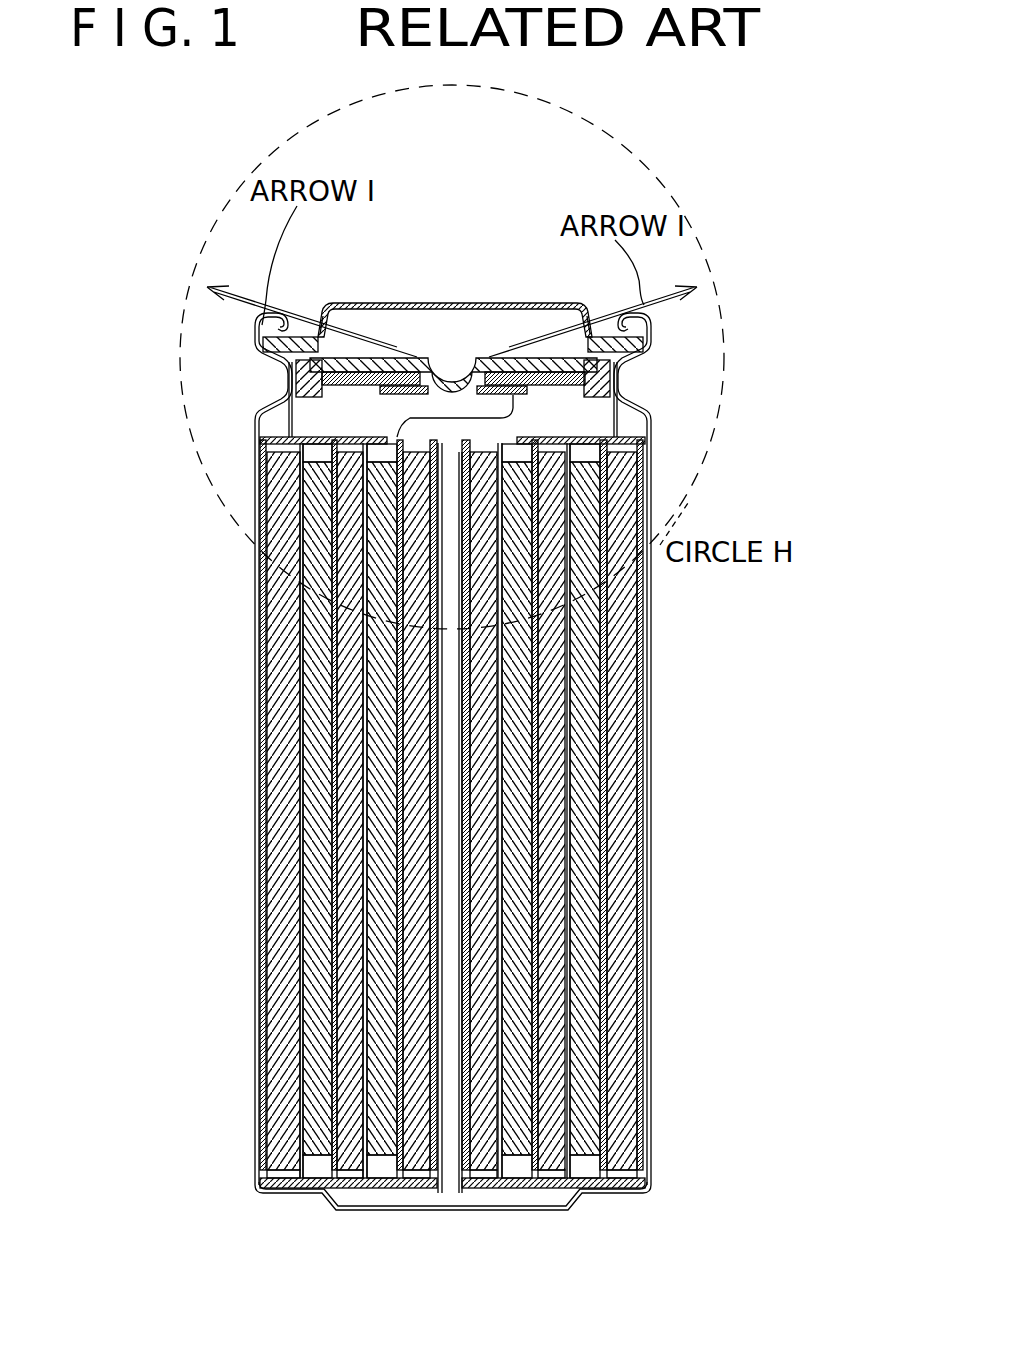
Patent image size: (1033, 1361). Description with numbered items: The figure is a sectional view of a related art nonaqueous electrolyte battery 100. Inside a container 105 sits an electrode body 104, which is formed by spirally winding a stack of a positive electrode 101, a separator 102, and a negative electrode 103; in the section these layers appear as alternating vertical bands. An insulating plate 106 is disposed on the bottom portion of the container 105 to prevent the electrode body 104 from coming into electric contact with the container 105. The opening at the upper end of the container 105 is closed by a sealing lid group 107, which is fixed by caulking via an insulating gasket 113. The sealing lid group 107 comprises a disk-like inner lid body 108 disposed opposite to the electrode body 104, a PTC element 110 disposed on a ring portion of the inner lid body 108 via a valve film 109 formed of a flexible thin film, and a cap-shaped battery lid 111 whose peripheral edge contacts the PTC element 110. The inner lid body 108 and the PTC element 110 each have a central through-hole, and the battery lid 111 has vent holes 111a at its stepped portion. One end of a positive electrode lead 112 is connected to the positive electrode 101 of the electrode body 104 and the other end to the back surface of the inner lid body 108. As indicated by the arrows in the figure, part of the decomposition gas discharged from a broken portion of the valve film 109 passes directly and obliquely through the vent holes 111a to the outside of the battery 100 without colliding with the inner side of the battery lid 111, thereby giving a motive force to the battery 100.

The nonaqueous electrolyte battery 100 is at (735, 276).
The positive electrode 101 is at (592, 737).
The separator 102 is at (600, 787).
The negative electrode 103 is at (627, 712).
The electrode body 104 is at (730, 700).
The container 105 is at (652, 964).
The insulating plate 106 is at (646, 1186).
The sealing lid group 107 is at (360, 306).
The inner lid body 108 is at (585, 374).
The valve film 109 is at (397, 352).
The PTC element 110 is at (628, 325).
The battery lid 111 is at (495, 357).
The vent holes 111a is at (315, 303).
The positive electrode lead 112 is at (513, 400).
The insulating gasket 113 is at (262, 331).